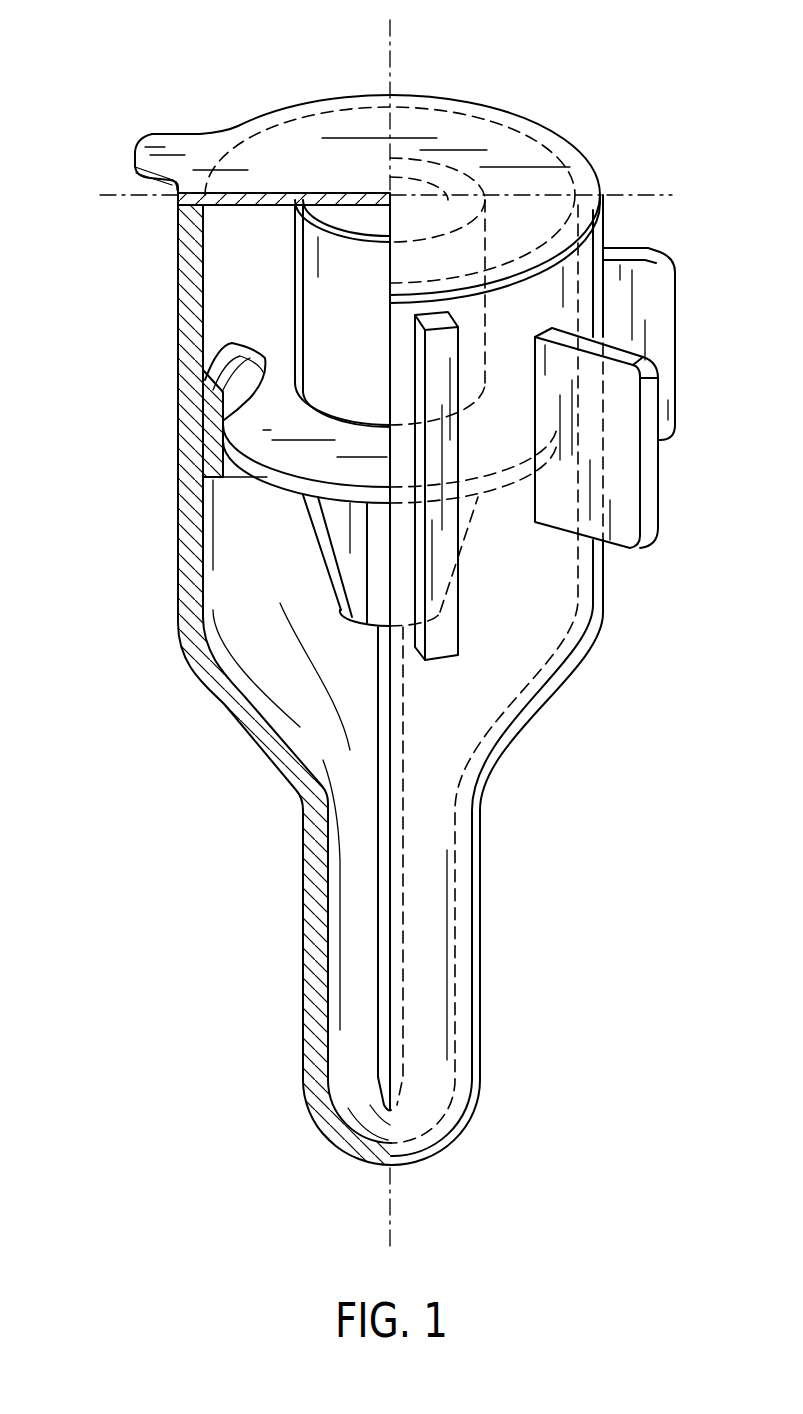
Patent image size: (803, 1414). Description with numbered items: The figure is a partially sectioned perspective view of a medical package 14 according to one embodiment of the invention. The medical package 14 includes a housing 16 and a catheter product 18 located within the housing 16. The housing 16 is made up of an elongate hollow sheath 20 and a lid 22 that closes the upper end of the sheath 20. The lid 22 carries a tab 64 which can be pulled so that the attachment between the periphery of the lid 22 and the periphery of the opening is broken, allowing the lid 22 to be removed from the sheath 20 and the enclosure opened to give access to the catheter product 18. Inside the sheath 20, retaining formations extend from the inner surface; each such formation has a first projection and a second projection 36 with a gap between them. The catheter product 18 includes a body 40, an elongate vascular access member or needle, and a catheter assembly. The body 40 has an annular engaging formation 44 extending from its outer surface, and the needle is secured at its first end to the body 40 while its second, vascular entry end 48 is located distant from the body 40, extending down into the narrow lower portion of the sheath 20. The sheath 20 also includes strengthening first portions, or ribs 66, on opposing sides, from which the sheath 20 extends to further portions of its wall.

The medical package 14 is at (132, 75).
The housing 16 is at (118, 311).
The catheter product 18 is at (278, 297).
The elongate hollow sheath 20 is at (178, 520).
The lid 22 is at (603, 229).
The second projection 36 is at (223, 470).
The body 40 is at (316, 336).
The annular engaging formation 44 is at (297, 485).
The vascular entry end 48 is at (388, 1096).
The tab 64 is at (170, 146).
The rib 66 is at (437, 622).